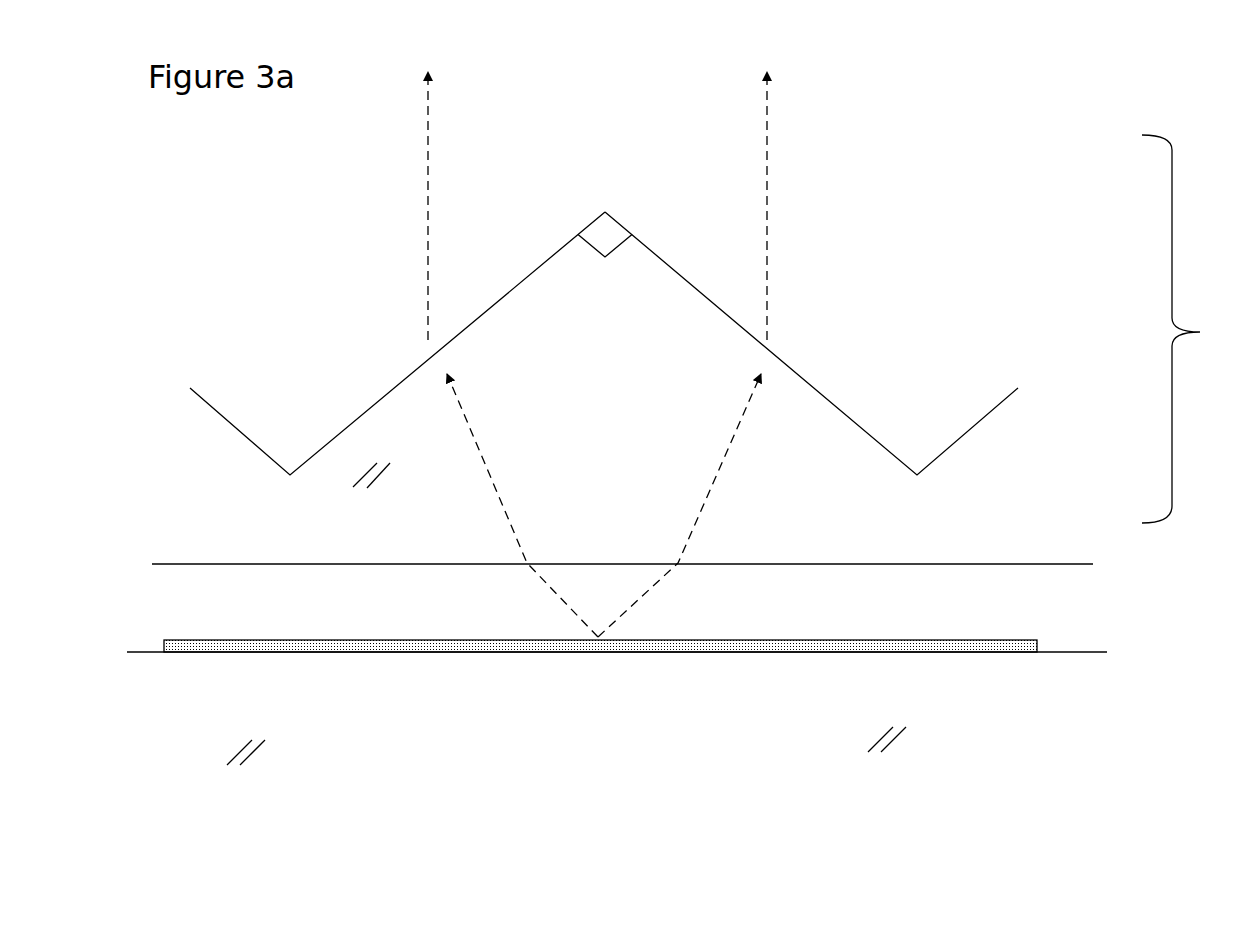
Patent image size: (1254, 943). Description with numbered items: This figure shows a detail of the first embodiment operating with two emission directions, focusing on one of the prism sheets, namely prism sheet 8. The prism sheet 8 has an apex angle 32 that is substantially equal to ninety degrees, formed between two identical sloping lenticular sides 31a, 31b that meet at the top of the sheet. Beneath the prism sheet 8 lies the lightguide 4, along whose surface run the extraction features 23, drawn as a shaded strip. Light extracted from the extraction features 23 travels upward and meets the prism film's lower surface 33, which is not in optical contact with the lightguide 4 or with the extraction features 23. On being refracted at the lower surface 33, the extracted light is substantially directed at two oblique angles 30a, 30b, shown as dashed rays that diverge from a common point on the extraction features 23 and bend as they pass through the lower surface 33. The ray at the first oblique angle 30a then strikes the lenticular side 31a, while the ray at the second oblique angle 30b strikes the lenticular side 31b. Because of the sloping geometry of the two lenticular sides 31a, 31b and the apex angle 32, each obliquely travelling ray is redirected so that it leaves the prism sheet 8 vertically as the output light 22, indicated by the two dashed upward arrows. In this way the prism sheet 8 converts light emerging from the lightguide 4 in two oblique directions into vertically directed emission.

The lightguide 4 is at (688, 742).
The prism sheet 8 is at (1192, 329).
The vertically directed light 22 is at (772, 188).
The extraction features 23 is at (977, 643).
The first oblique angle 30a is at (473, 423).
The second oblique angle 30b is at (690, 533).
The first lenticular side 31a is at (400, 385).
The second lenticular side 31b is at (798, 373).
The apex angle 32 is at (603, 222).
The lower surface 33 is at (325, 562).